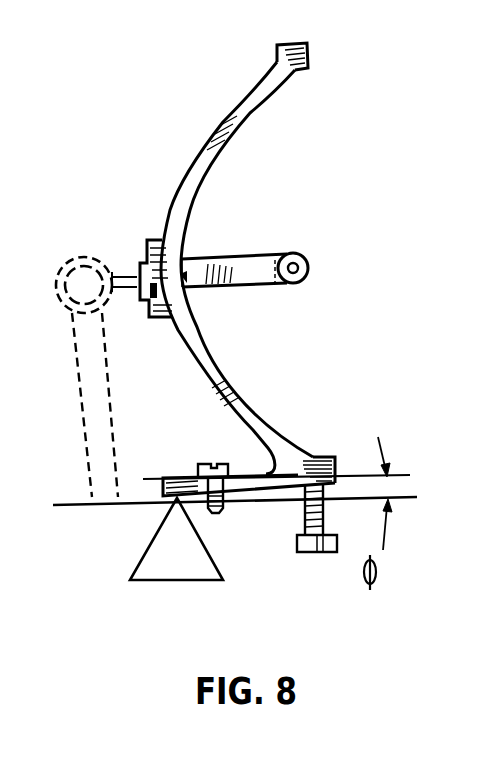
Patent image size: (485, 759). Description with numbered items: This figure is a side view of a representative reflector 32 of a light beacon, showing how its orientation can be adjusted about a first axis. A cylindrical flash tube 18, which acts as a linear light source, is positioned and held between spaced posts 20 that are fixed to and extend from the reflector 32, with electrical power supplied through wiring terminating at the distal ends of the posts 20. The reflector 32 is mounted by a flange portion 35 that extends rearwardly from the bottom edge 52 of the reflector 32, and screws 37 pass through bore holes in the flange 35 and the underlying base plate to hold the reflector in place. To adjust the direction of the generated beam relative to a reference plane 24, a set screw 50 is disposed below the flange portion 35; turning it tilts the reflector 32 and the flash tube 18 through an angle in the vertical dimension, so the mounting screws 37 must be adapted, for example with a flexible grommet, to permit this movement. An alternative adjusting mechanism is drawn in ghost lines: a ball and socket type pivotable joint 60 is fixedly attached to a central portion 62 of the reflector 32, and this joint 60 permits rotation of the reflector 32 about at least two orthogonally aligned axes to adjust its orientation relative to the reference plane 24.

The flash tube 18 is at (310, 268).
The posts 20 is at (255, 257).
The reference plane 24 is at (355, 478).
The reflector 32 is at (227, 117).
The flange portion 35 is at (165, 476).
The screws 37 is at (203, 464).
The set screw 50 is at (300, 512).
The bottom edge 52 is at (290, 437).
The ball and socket joint 60 is at (75, 257).
The central portion 62 is at (156, 238).